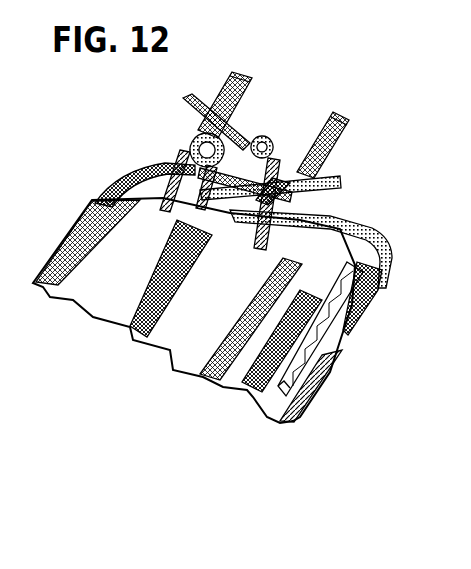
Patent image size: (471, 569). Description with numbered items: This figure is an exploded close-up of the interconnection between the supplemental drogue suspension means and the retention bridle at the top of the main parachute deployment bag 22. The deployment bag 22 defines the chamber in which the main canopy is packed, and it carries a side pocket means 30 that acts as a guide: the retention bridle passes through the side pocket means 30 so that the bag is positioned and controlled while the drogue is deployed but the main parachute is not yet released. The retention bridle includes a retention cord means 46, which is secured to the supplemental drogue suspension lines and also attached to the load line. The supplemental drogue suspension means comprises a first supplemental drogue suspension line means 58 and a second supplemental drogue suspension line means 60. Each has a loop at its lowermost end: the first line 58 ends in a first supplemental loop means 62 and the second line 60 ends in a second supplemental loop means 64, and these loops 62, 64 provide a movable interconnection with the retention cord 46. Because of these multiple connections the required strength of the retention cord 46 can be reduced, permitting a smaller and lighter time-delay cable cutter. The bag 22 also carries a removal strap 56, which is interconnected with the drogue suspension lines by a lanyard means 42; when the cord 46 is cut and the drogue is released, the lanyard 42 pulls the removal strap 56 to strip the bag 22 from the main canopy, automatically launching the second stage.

The main parachute deployment bag 22 is at (318, 382).
The side pocket means 30 is at (330, 227).
The lanyard means 42 is at (270, 140).
The retention cord means 46 is at (160, 167).
The removal strap 56 is at (366, 290).
The first supplemental drogue suspension line means 58 is at (247, 73).
The second supplemental drogue suspension line means 60 is at (340, 133).
The first supplemental loop means 62 is at (193, 133).
The second supplemental loop means 64 is at (341, 183).